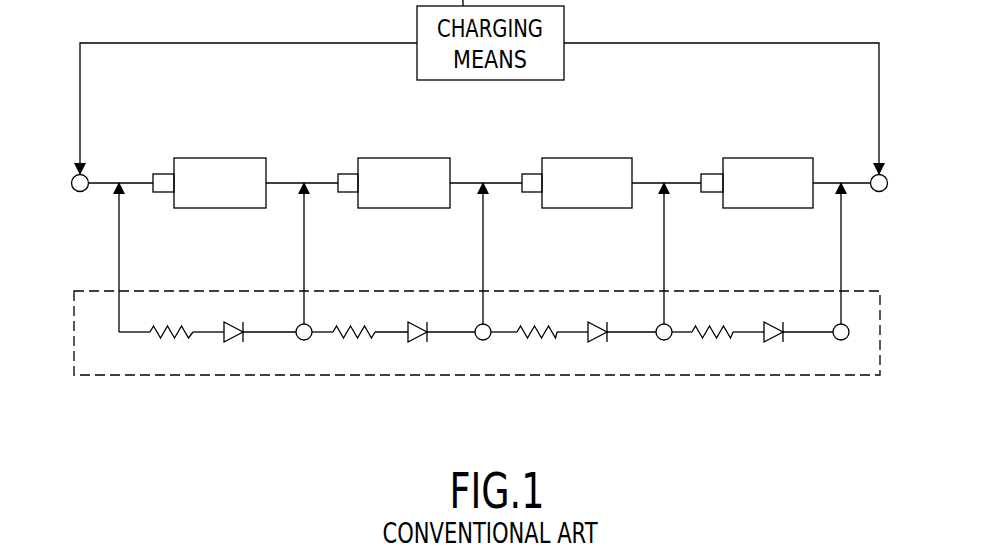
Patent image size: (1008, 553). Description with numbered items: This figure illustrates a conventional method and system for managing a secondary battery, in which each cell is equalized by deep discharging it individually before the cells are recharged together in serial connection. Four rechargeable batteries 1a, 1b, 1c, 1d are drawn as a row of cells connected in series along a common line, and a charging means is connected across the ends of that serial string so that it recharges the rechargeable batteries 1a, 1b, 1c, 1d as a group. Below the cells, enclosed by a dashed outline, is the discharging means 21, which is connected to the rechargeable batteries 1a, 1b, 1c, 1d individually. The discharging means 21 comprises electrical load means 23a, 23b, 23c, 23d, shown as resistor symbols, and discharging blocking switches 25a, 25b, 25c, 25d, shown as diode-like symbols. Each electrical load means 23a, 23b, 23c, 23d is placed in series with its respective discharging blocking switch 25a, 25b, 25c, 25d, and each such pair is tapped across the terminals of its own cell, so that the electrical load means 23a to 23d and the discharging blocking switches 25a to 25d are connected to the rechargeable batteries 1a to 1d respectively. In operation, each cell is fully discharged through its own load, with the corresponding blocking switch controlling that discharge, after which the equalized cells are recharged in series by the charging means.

The rechargeable battery 1a is at (212, 158).
The rechargeable battery 1b is at (398, 158).
The rechargeable battery 1c is at (593, 158).
The rechargeable battery 1d is at (765, 158).
The discharging means 21 is at (80, 291).
The electrical load means 23a is at (157, 343).
The electrical load means 23b is at (347, 343).
The electrical load means 23c is at (528, 343).
The electrical load means 23d is at (705, 343).
The discharging blocking switch 25a is at (230, 342).
The discharging blocking switch 25b is at (415, 342).
The discharging blocking switch 25c is at (595, 342).
The discharging blocking switch 25d is at (770, 342).